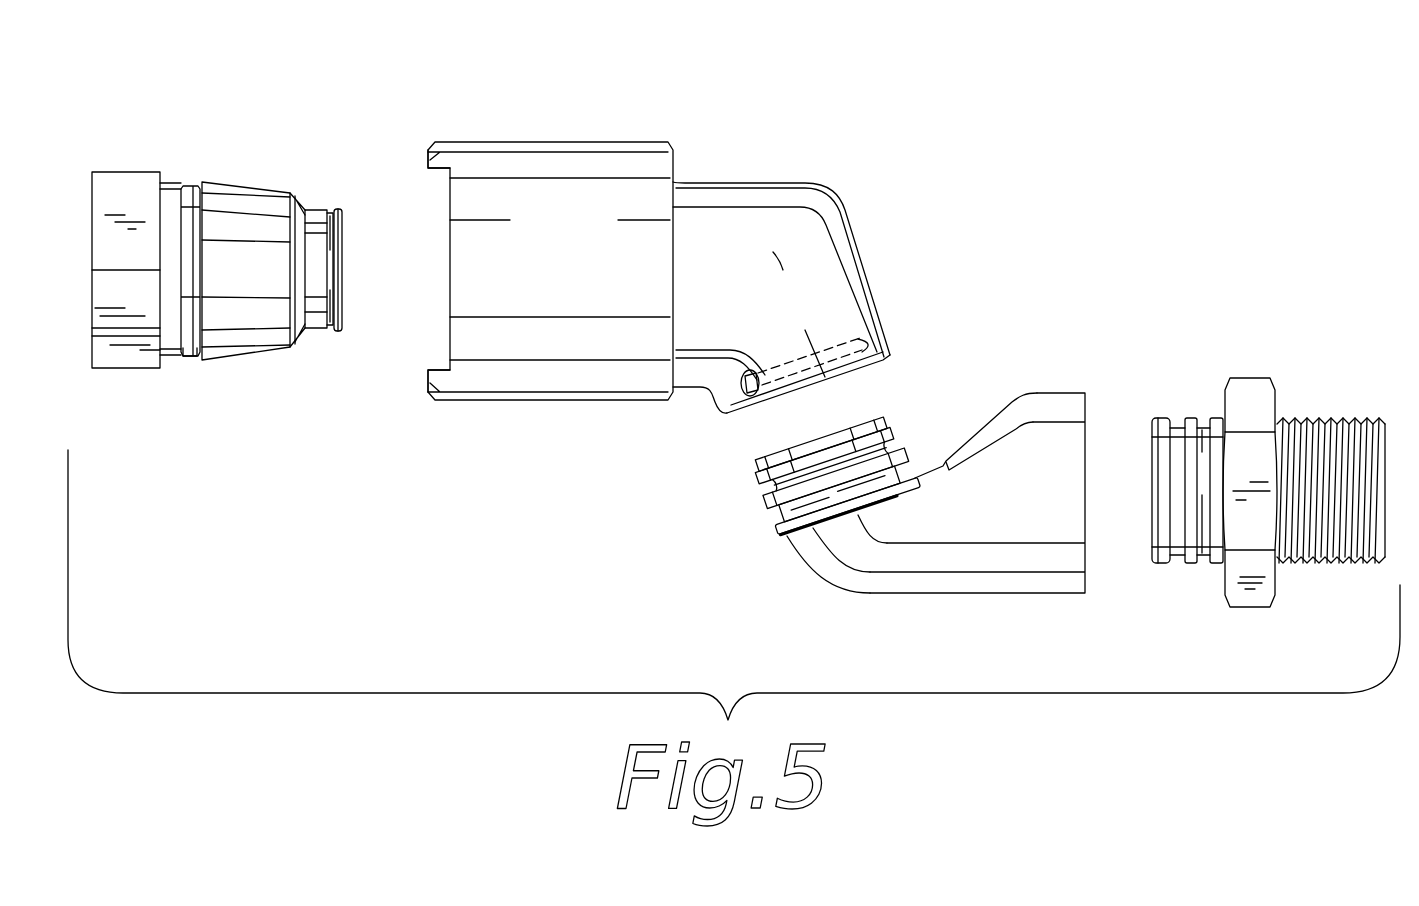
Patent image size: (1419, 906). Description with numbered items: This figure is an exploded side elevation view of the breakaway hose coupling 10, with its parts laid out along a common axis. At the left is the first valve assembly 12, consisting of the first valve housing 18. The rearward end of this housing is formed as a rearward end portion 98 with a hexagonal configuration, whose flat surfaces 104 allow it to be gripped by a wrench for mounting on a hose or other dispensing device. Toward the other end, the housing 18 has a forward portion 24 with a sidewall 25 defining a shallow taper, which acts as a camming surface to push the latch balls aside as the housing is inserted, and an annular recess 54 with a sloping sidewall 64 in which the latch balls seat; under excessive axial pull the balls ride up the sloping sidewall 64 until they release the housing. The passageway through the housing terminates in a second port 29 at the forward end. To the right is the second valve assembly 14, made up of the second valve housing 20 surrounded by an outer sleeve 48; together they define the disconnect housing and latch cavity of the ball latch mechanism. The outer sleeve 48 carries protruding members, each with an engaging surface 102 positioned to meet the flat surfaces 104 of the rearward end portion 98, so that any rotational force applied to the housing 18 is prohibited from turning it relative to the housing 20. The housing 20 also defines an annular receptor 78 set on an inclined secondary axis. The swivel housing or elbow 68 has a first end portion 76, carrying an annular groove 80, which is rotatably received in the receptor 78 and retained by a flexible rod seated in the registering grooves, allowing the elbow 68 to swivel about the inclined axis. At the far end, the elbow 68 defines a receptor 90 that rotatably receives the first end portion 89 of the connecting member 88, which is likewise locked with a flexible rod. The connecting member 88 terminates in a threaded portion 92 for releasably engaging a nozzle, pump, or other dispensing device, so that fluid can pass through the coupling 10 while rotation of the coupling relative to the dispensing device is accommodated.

The breakaway hose coupling 10 is at (947, 147).
The first valve assembly 12 is at (241, 114).
The second valve assembly 14 is at (736, 146).
The first valve housing 18 is at (255, 182).
The second valve housing 20 is at (776, 182).
The forward portion 24 is at (316, 330).
The sidewall 25 is at (246, 360).
The second port 29 is at (344, 238).
The outer sleeve 48 is at (560, 140).
The annular recess 54 is at (190, 357).
The sloping sidewall 64 is at (197, 186).
The elbow 68 is at (954, 461).
The first end portion 76 is at (762, 478).
The annular receptor 78 is at (873, 373).
The annular groove 80 is at (905, 470).
The connecting member 88 is at (1245, 378).
The first end portion 89 is at (1162, 418).
The receptor 90 is at (1088, 440).
The threaded portion 92 is at (1335, 418).
The rearward end portion 98 is at (133, 368).
The engaging surface 102 is at (447, 170).
The flat surfaces 104 is at (130, 172).